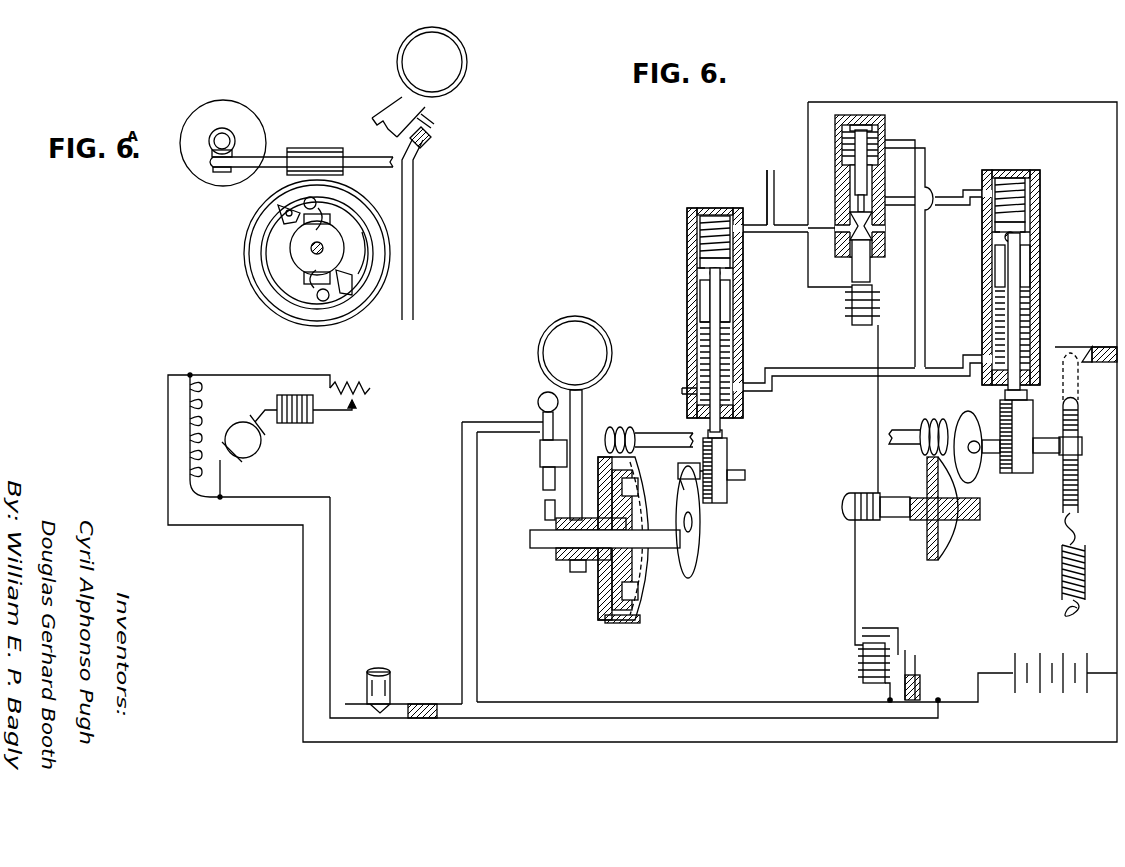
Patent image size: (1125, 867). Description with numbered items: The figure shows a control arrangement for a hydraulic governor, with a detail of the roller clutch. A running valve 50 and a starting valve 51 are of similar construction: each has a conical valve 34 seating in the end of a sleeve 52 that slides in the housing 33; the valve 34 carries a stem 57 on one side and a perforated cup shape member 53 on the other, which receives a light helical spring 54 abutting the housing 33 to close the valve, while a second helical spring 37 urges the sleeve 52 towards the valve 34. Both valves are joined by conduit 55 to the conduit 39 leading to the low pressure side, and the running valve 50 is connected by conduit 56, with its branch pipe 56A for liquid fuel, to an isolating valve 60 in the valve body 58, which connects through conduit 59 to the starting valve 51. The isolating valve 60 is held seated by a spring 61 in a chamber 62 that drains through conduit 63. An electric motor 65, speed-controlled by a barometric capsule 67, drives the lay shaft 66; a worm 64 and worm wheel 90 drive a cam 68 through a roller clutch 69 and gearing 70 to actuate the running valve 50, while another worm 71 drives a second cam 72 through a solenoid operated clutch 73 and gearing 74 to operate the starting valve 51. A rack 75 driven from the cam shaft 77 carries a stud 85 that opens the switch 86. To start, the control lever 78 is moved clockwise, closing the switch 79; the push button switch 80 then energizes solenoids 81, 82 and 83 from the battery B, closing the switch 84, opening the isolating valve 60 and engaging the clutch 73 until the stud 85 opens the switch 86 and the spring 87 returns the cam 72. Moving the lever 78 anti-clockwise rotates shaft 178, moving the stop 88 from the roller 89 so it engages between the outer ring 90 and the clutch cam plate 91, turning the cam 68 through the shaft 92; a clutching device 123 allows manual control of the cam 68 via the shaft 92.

In FIG. 6, the housing 33 is at (700, 276).
In FIG. 6, the conical valve 34 is at (721, 273).
In FIG. 6, the second helical spring 37 is at (732, 340).
In FIG. 6, the conduit 39 is at (682, 388).
In FIG. 6, the running valve 50 is at (715, 210).
In FIG. 6, the starting valve 51 is at (995, 176).
In FIG. 6, the sleeve 52 is at (731, 306).
In FIG. 6, the perforated cup shape member 53 is at (730, 262).
In FIG. 6, the light helical spring 54 is at (703, 235).
In FIG. 6, the conduit 55 is at (828, 378).
In FIG. 6, the conduit 56 is at (760, 225).
In FIG. 6, the branch pipe 56A is at (781, 176).
In FIG. 6, the stem 57 is at (712, 305).
In FIG. 6, the valve body 58 is at (845, 180).
In FIG. 6, the conduit 59 is at (948, 207).
In FIG. 6, the isolating valve 60 is at (858, 173).
In FIG. 6, the spring 61 is at (877, 140).
In FIG. 6, the chamber 62 is at (872, 128).
In FIG. 6, the conduit 63 is at (918, 188).
In FIG. 6A, the worm 64 is at (318, 150).
In FIG. 6, the worm 64 is at (612, 427).
In FIG. 6A, the electric motor 65 is at (232, 118).
In FIG. 6, the electric motor 65 is at (244, 444).
In FIG. 6A, the lay shaft 66 is at (271, 158).
In FIG. 6, the lay shaft 66 is at (665, 437).
In FIG. 6, the barometric capsule 67 is at (296, 423).
In FIG. 6, the cam 68 is at (728, 466).
In FIG. 6A, the roller clutch 69 is at (360, 262).
In FIG. 6, the roller clutch 69 is at (628, 492).
In FIG. 6, the gearing 70 is at (690, 497).
In FIG. 6, the worm 71 is at (927, 452).
In FIG. 6, the second cam 72 is at (1010, 398).
In FIG. 6, the solenoid operated clutch 73 is at (953, 528).
In FIG. 6, the gearing 74 is at (962, 466).
In FIG. 6, the rack 75 is at (1079, 490).
In FIG. 6, the cam shaft 77 is at (1055, 455).
In FIG. 6A, the control lever 78 is at (437, 60).
In FIG. 6, the control lever 78 is at (565, 345).
In FIG. 6A, the switch 79 is at (430, 125).
In FIG. 6, the push button switch 80 is at (385, 705).
In FIG. 6, the solenoid 81 is at (863, 656).
In FIG. 6, the solenoid 82 is at (856, 314).
In FIG. 6, the solenoid 83 is at (858, 494).
In FIG. 6, the switch 84 is at (915, 661).
In FIG. 6, the stud 85 is at (1083, 393).
In FIG. 6, the switch 86 is at (1098, 336).
In FIG. 6, the spring 87 is at (1077, 563).
In FIG. 6A, the stop 88 is at (278, 211).
In FIG. 6A, the roller 89 is at (318, 203).
In FIG. 6A, the worm wheel 90 is at (262, 283).
In FIG. 6, the worm wheel 90 is at (612, 618).
In FIG. 6A, the clutch cam plate 91 is at (298, 245).
In FIG. 6, the shaft 92 is at (648, 580).
In FIG. 6, the clutching device 123 is at (545, 424).
In FIG. 6, the shaft 178 is at (560, 548).
In FIG. 6, the battery B is at (1051, 658).